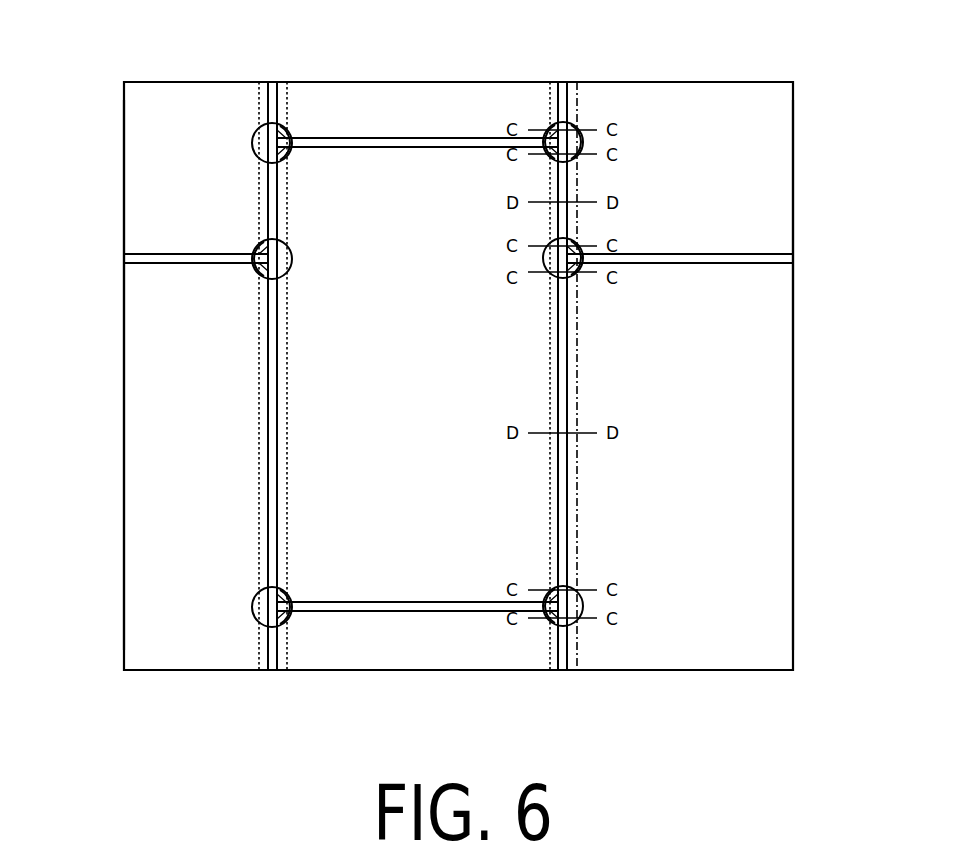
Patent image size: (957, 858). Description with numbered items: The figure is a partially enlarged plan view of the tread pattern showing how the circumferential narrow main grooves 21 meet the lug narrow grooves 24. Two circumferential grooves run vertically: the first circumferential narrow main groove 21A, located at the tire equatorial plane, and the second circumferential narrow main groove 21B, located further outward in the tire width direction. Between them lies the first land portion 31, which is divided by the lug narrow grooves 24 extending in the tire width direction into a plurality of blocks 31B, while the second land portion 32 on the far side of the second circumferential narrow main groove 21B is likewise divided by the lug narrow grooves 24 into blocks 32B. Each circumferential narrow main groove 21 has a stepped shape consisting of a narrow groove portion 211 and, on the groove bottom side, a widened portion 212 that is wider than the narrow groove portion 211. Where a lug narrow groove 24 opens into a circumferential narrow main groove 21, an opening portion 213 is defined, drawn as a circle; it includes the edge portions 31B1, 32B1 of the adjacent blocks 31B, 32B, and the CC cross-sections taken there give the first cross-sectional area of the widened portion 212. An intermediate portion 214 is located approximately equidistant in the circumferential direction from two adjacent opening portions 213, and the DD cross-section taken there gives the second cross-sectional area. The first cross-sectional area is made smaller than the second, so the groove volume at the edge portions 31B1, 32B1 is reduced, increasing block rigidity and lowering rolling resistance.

The circumferential narrow main groove 21 is at (457, 337).
The first circumferential narrow main groove 21A is at (457, 337).
The second circumferential narrow main groove 21B is at (706, 337).
The narrow groove portion 211 is at (268, 385).
The widened portion 212 is at (258, 428).
The opening portion 213 is at (252, 143).
The intermediate portion 214 is at (577, 198).
The lug narrow groove 24 is at (387, 138).
The first land portion 31 is at (194, 96).
The block 31B is at (143, 128).
The edge portion 31B1 is at (297, 100).
The second land portion 32 is at (722, 100).
The block 32B is at (778, 127).
The edge portion 32B1 is at (578, 242).